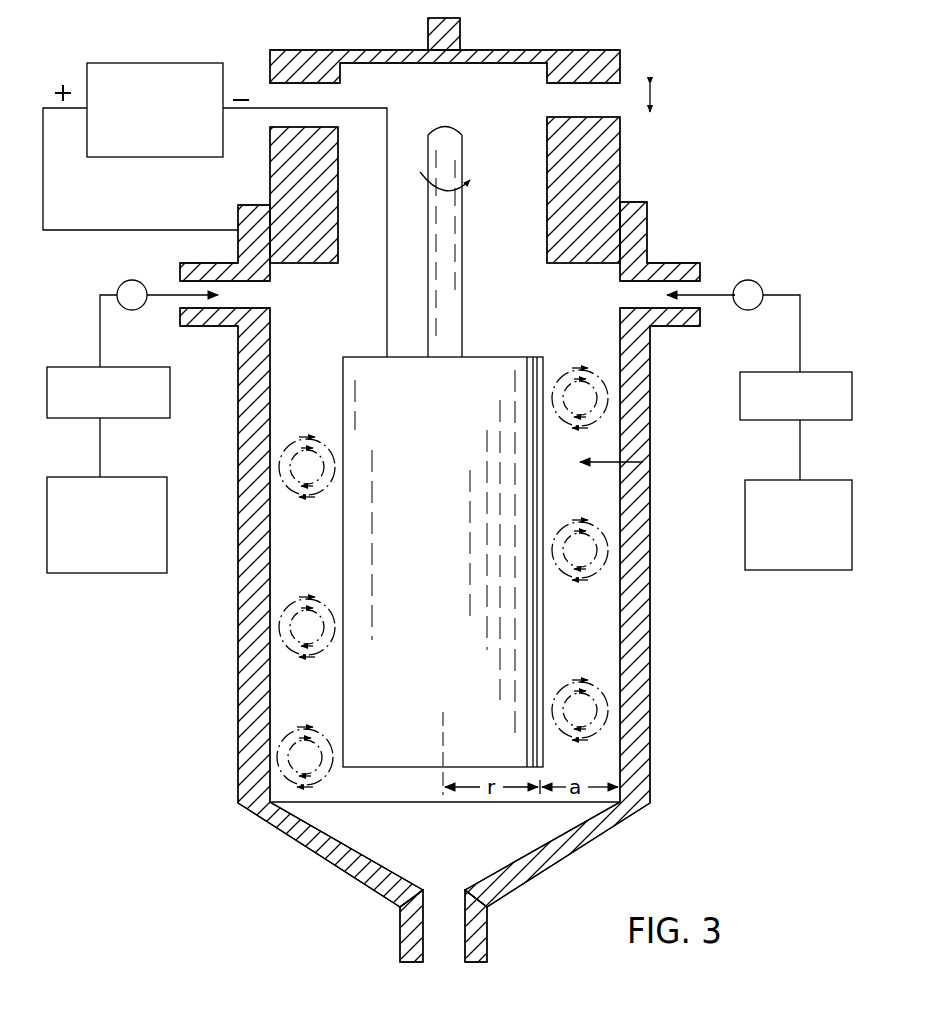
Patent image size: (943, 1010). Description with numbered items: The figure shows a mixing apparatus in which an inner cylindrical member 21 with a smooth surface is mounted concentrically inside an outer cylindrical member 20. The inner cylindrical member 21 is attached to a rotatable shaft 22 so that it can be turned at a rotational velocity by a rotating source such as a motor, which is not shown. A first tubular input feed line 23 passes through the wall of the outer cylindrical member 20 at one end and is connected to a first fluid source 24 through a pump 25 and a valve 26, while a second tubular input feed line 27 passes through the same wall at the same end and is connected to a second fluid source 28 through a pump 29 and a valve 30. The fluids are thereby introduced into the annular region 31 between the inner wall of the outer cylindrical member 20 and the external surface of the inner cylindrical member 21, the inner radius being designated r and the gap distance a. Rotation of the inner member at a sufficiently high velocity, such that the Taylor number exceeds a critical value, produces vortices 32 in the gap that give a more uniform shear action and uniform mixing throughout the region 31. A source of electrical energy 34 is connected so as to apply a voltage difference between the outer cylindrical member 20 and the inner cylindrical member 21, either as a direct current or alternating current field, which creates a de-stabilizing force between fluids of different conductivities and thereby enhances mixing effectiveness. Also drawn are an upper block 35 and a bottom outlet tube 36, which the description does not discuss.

The outer cylindrical member 20 is at (247, 664).
The inner cylindrical member 21 is at (443, 562).
The rotatable shaft 22 is at (447, 317).
The first tubular input feed line 23 is at (183, 326).
The first fluid source 24 is at (150, 477).
The pump 25 is at (170, 389).
The valve 26 is at (141, 281).
The second tubular input feed line 27 is at (675, 263).
The second fluid source 28 is at (780, 571).
The pump 29 is at (740, 396).
The valve 30 is at (755, 282).
The region 31 is at (649, 458).
The vortices 32 is at (320, 440).
The source of electrical energy 34 is at (180, 63).
The upper electrode holder block 35 is at (608, 149).
The drain outlet tube 36 is at (483, 947).